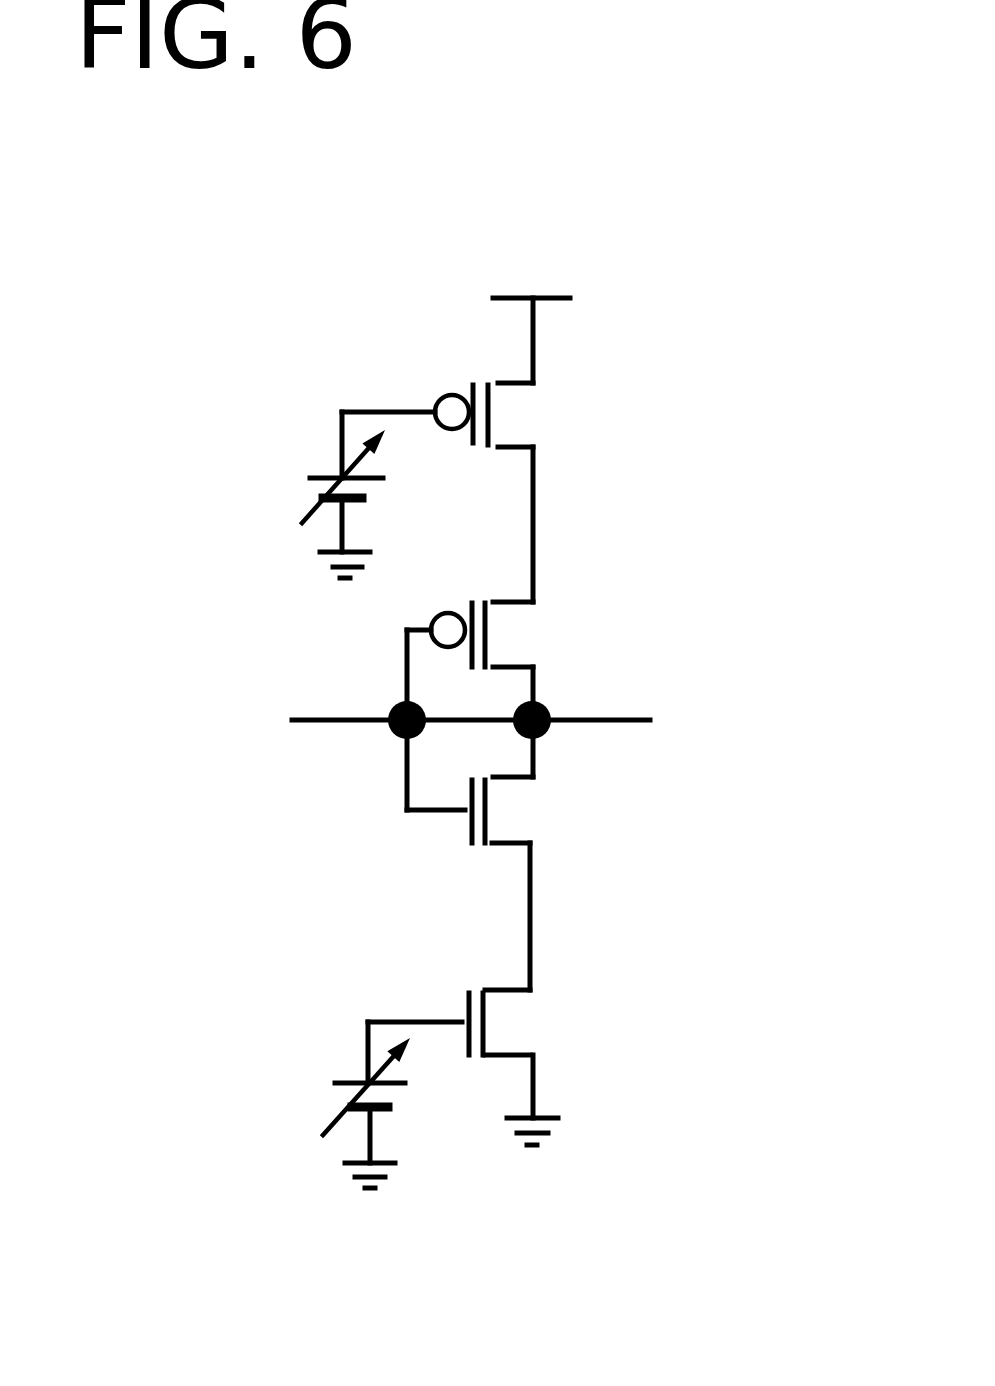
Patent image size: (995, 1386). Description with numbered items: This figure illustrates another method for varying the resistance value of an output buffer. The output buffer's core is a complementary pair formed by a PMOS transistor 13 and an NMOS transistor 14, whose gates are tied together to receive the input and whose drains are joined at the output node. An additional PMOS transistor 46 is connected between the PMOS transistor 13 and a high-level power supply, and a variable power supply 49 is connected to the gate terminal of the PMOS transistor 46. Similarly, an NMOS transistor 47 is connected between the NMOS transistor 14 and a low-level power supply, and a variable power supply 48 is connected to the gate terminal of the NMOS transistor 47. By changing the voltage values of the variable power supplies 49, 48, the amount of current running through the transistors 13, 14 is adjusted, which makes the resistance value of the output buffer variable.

The PMOS transistor 46 is at (553, 403).
The PMOS transistor 13 is at (557, 597).
The NMOS transistor 14 is at (570, 818).
The NMOS transistor 47 is at (553, 1022).
The variable power supply 49 is at (297, 485).
The variable power supply 48 is at (320, 1087).